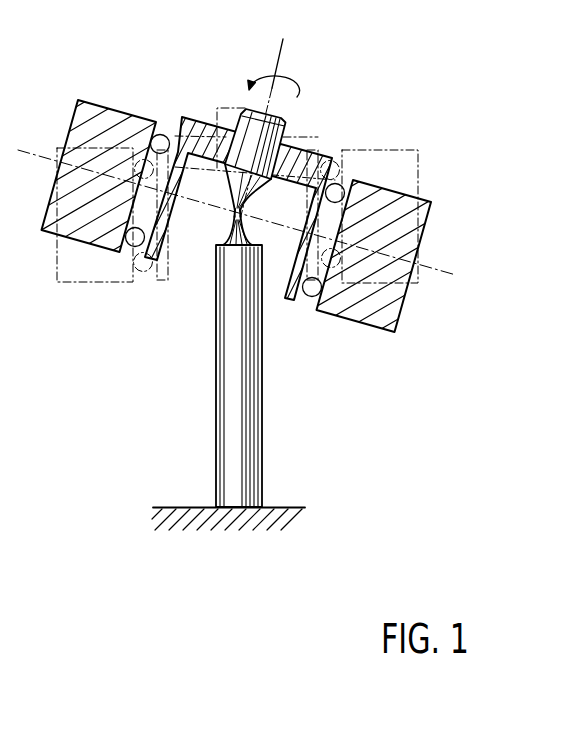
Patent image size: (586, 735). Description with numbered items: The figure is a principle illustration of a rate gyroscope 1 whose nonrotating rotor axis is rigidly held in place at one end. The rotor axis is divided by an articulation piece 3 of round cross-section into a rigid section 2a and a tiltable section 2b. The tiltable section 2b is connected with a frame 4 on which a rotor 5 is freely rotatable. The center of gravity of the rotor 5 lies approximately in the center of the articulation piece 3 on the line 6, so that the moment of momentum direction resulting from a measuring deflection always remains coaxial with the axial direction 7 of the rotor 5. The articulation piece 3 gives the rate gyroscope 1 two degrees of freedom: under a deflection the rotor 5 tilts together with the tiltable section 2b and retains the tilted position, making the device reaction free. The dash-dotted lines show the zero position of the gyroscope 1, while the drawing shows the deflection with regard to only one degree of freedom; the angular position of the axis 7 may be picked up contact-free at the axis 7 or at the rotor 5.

The rate gyroscope 1 is at (334, 96).
The rigid section 2a is at (250, 386).
The tiltable section 2b is at (286, 128).
The articulation piece 3 is at (236, 214).
The frame 4 is at (197, 119).
The rotor 5 is at (86, 128).
The line 6 is at (451, 275).
The axial direction 7 is at (281, 43).